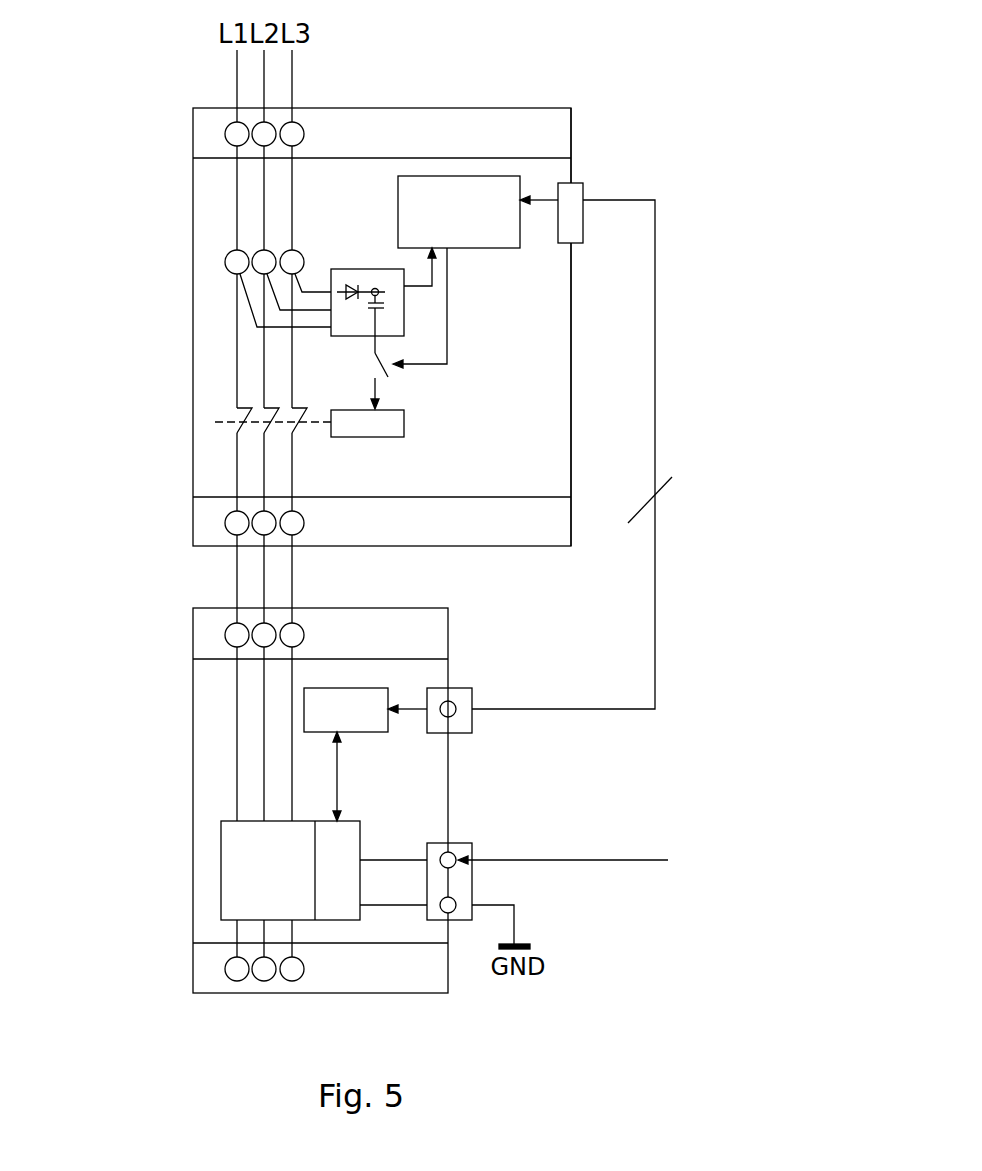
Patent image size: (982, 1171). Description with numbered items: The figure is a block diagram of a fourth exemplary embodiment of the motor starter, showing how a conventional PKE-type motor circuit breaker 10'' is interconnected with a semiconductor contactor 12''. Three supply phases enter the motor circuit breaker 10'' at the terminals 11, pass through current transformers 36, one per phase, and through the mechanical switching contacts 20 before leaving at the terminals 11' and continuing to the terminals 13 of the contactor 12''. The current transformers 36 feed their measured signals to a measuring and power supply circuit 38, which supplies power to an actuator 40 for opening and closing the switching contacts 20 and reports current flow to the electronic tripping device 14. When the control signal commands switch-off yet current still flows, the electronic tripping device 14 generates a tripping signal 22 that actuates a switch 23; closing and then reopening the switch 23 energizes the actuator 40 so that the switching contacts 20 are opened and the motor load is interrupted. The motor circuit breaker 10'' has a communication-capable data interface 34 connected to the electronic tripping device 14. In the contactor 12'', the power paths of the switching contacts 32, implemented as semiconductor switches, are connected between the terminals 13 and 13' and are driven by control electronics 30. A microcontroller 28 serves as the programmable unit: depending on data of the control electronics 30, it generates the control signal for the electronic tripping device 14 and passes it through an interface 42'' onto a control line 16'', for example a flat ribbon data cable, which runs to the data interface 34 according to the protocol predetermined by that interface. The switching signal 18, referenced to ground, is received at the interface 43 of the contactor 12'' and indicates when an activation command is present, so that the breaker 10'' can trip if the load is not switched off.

The motor circuit breaker 10'' is at (311, 327).
The terminals 11 is at (349, 146).
The terminals 11' is at (348, 527).
The current transformers 36 is at (224, 262).
The switching contacts 20 is at (213, 430).
The electronic tripping device 14 is at (410, 205).
The data interface 34 is at (583, 222).
The control line 16'' is at (611, 454).
The measuring and power supply circuit 38 is at (341, 337).
The tripping signal 22 is at (432, 366).
The switch 23 is at (397, 373).
The actuator 40 is at (369, 437).
The semiconductor contactor 12'' is at (250, 800).
The terminals 13 is at (285, 643).
The terminals 13' is at (285, 970).
The interface 42'' is at (469, 698).
The microcontroller 28 is at (370, 723).
The switching contacts 32 is at (233, 867).
The control electronics 30 is at (340, 910).
The interface 43 is at (462, 880).
The switching signal 18 is at (620, 862).